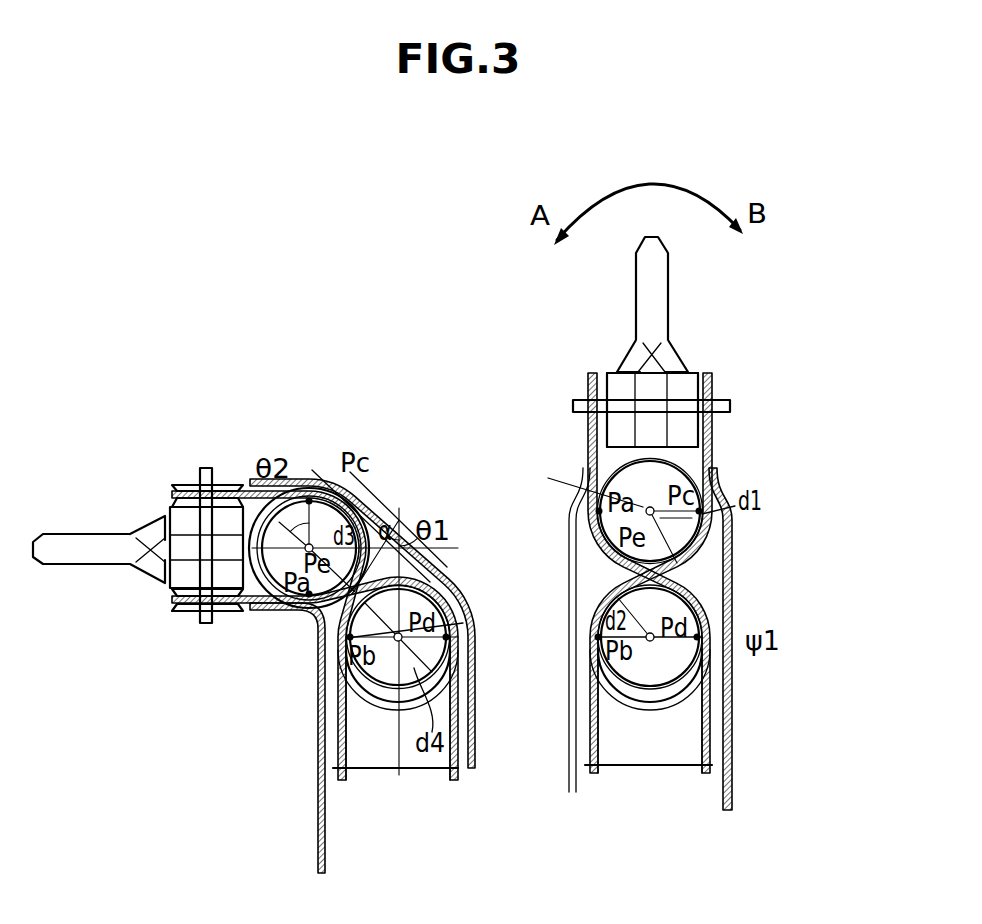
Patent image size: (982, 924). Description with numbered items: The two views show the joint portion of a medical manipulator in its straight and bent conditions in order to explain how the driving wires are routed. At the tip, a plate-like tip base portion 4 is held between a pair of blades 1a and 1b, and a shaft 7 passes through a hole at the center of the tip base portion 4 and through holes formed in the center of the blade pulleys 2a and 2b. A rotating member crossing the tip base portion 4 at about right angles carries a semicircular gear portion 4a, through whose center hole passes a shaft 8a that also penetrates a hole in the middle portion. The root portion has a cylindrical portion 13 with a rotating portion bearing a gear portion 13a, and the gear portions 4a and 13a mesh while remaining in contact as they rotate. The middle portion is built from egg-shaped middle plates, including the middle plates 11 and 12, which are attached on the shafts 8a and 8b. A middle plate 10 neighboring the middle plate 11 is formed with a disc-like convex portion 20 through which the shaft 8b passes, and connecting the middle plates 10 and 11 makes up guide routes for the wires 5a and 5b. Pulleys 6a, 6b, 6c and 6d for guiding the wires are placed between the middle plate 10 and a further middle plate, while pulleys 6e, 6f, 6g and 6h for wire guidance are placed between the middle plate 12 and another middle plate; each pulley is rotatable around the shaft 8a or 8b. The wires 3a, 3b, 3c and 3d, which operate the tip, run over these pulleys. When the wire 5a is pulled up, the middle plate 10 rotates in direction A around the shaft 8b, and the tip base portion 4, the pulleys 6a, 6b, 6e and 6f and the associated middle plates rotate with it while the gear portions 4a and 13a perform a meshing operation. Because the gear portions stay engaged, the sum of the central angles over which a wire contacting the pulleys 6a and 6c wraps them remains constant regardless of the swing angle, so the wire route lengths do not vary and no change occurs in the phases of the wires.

In FIG. 3a, the blade 1a is at (75, 547).
In FIG. 3b, the blade 1a is at (658, 318).
In FIG. 3a, the blade 1b is at (160, 570).
In FIG. 3b, the blade 1b is at (638, 352).
In FIG. 3a, the blade pulley 2a is at (178, 488).
In FIG. 3b, the blade pulley 2a is at (676, 370).
In FIG. 3a, the blade pulley 2b is at (180, 609).
In FIG. 3b, the blade pulley 2b is at (604, 382).
In FIG. 3a, the wire 3a is at (333, 586).
In FIG. 3b, the wire 3a is at (736, 573).
In FIG. 3a, the wire 3b is at (333, 586).
In FIG. 3b, the wire 3b is at (736, 573).
In FIG. 3a, the wire 3c is at (337, 625).
In FIG. 3b, the wire 3c is at (651, 569).
In FIG. 3a, the wire 3d is at (337, 625).
In FIG. 3b, the wire 3d is at (651, 569).
In FIG. 3a, the tip base portion 4 is at (227, 555).
In FIG. 3b, the tip base portion 4 is at (652, 445).
In FIG. 3a, the gear portion 4a is at (378, 525).
In FIG. 3b, the gear portion 4a is at (698, 563).
In FIG. 3a, the wire 5a is at (316, 815).
In FIG. 3b, the wire 5a is at (570, 770).
In FIG. 3a, the wire 5b is at (480, 748).
In FIG. 3b, the wire 5b is at (732, 770).
In FIG. 3a, the pulley 6a is at (354, 508).
In FIG. 3b, the pulley 6a is at (768, 511).
In FIG. 3a, the pulley 6b is at (354, 508).
In FIG. 3b, the pulley 6b is at (768, 511).
In FIG. 3a, the pulley 6e is at (354, 508).
In FIG. 3b, the pulley 6e is at (768, 511).
In FIG. 3a, the pulley 6f is at (312, 503).
In FIG. 3b, the pulley 6f is at (700, 518).
In FIG. 3a, the pulley 6c is at (441, 612).
In FIG. 3b, the pulley 6c is at (769, 643).
In FIG. 3a, the pulley 6d is at (441, 612).
In FIG. 3b, the pulley 6d is at (769, 643).
In FIG. 3a, the pulley 6g is at (441, 612).
In FIG. 3b, the pulley 6g is at (769, 643).
In FIG. 3a, the pulley 6h is at (432, 585).
In FIG. 3b, the pulley 6h is at (688, 662).
In FIG. 3a, the shaft 7 is at (205, 468).
In FIG. 3b, the shaft 7 is at (726, 404).
In FIG. 3a, the shaft 8a is at (379, 515).
In FIG. 3b, the shaft 8a is at (581, 496).
In FIG. 3a, the shaft 8b is at (465, 663).
In FIG. 3b, the shaft 8b is at (651, 642).
In FIG. 3a, the middle plate 10 is at (280, 605).
In FIG. 3b, the middle plate 10 is at (757, 512).
In FIG. 3a, the middle plate 11 is at (280, 605).
In FIG. 3b, the middle plate 11 is at (757, 512).
In FIG. 3a, the middle plate 12 is at (306, 622).
In FIG. 3b, the middle plate 12 is at (712, 540).
In FIG. 3a, the cylindrical portion 13 is at (352, 733).
In FIG. 3b, the cylindrical portion 13 is at (688, 732).
In FIG. 3a, the gear portion 13a is at (400, 560).
In FIG. 3b, the gear portion 13a is at (712, 598).
In FIG. 3a, the convex portion 20 is at (397, 702).
In FIG. 3b, the convex portion 20 is at (630, 690).